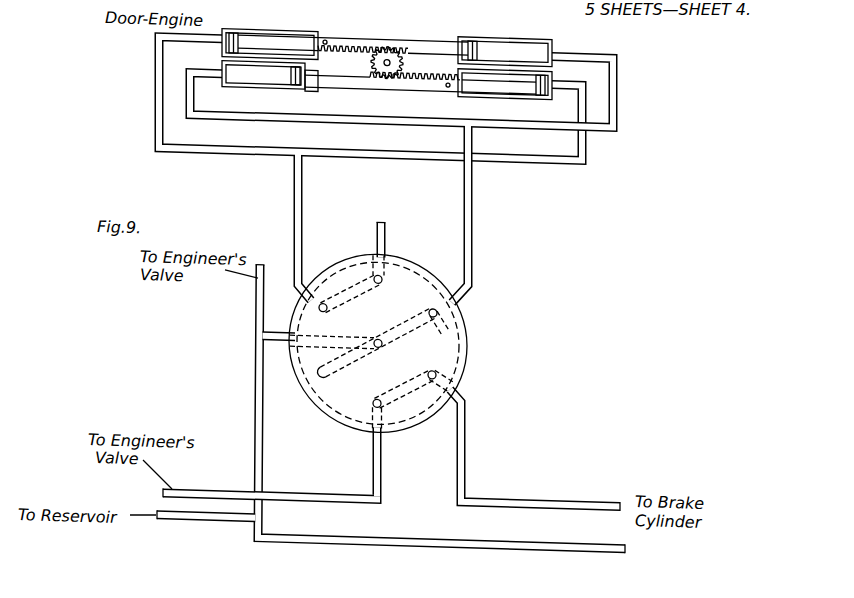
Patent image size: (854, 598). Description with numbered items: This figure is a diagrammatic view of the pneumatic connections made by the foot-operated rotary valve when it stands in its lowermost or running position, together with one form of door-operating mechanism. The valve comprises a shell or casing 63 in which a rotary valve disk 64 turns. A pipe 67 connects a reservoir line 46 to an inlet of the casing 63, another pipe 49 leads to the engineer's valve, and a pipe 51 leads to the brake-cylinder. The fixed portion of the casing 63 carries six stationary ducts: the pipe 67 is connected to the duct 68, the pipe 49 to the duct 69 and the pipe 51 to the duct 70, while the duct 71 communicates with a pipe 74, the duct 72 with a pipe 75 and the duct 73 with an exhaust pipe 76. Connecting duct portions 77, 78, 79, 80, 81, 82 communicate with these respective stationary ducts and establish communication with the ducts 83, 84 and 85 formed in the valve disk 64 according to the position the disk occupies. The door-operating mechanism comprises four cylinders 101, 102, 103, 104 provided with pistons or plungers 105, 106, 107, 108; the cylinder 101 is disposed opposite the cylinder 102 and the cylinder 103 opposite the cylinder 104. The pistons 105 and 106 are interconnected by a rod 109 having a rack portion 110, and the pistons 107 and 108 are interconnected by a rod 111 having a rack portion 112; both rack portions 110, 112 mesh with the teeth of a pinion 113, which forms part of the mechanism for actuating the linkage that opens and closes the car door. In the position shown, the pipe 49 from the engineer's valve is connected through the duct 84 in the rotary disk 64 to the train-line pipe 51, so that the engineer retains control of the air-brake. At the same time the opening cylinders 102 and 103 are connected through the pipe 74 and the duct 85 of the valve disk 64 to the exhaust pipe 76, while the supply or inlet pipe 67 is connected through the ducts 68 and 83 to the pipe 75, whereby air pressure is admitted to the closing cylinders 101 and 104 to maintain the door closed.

The reservoir line 46 is at (257, 284).
The pipe 49 is at (313, 481).
The pipe 51 is at (505, 485).
The shell or casing 63 is at (470, 308).
The rotary valve disk 64 is at (462, 326).
The pipe 67 is at (278, 330).
The duct 68 is at (326, 330).
The duct 69 is at (371, 414).
The duct 70 is at (432, 374).
The duct 71 is at (318, 290).
The duct 72 is at (432, 291).
The duct 73 is at (377, 251).
The pipe 74 is at (158, 86).
The pipe 75 is at (619, 89).
The exhaust pipe 76 is at (386, 230).
The connecting duct portion 77 is at (381, 336).
The connecting duct portion 78 is at (377, 387).
The connecting duct portion 79 is at (434, 355).
The connecting duct portion 80 is at (323, 303).
The connecting duct portion 81 is at (437, 312).
The connecting duct portion 82 is at (381, 272).
The duct 83 is at (400, 319).
The duct 84 is at (414, 366).
The duct 85 is at (353, 282).
The cylinder 101 is at (257, 74).
The cylinder 102 is at (517, 78).
The cylinder 103 is at (288, 31).
The cylinder 104 is at (532, 24).
The piston or plunger 105 is at (293, 76).
The piston or plunger 106 is at (541, 77).
The piston or plunger 107 is at (235, 24).
The piston or plunger 108 is at (477, 26).
The rod 109 is at (352, 66).
The rack portion 110 is at (437, 67).
The rod 111 is at (308, 31).
The rack portion 112 is at (352, 39).
The pinion 113 is at (392, 45).